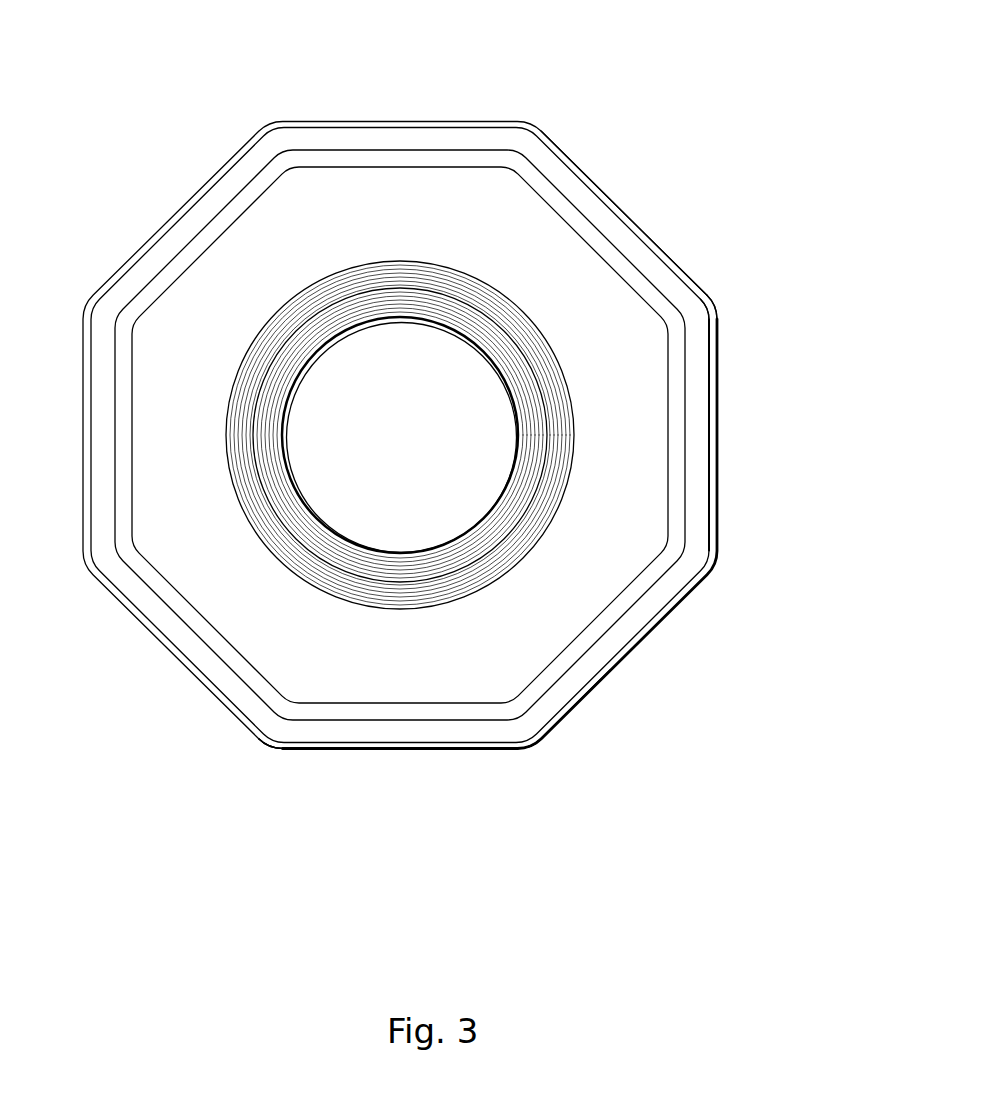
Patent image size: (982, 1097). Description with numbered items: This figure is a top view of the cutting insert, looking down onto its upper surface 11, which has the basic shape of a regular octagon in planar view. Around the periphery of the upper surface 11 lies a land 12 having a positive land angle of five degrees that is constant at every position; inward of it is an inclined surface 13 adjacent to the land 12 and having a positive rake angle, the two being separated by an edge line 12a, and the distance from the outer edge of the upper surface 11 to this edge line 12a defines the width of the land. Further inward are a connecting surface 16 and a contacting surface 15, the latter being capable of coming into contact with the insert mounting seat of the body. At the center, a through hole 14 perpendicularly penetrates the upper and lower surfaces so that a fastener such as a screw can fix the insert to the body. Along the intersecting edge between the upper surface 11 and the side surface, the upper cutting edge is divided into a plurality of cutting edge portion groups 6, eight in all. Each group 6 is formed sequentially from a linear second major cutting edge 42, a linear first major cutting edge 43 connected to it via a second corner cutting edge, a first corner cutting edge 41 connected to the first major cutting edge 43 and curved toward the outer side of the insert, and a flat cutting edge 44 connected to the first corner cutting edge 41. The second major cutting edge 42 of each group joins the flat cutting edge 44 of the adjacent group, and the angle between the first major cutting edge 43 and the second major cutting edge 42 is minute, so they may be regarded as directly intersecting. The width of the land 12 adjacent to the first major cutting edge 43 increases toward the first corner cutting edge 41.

The upper surface 11 is at (550, 77).
The land 12 is at (617, 207).
The edge line 12a is at (693, 297).
The inclined surface 13 is at (647, 257).
The through hole 14 is at (285, 423).
The contacting surface 15 is at (640, 407).
The connecting surface 16 is at (675, 485).
The cutting edge portion group 6 is at (155, 803).
The first corner cutting edge 41 is at (277, 752).
The second major cutting edge 42 is at (373, 752).
The first major cutting edge 43 is at (313, 750).
The flat cutting edge 44 is at (255, 737).